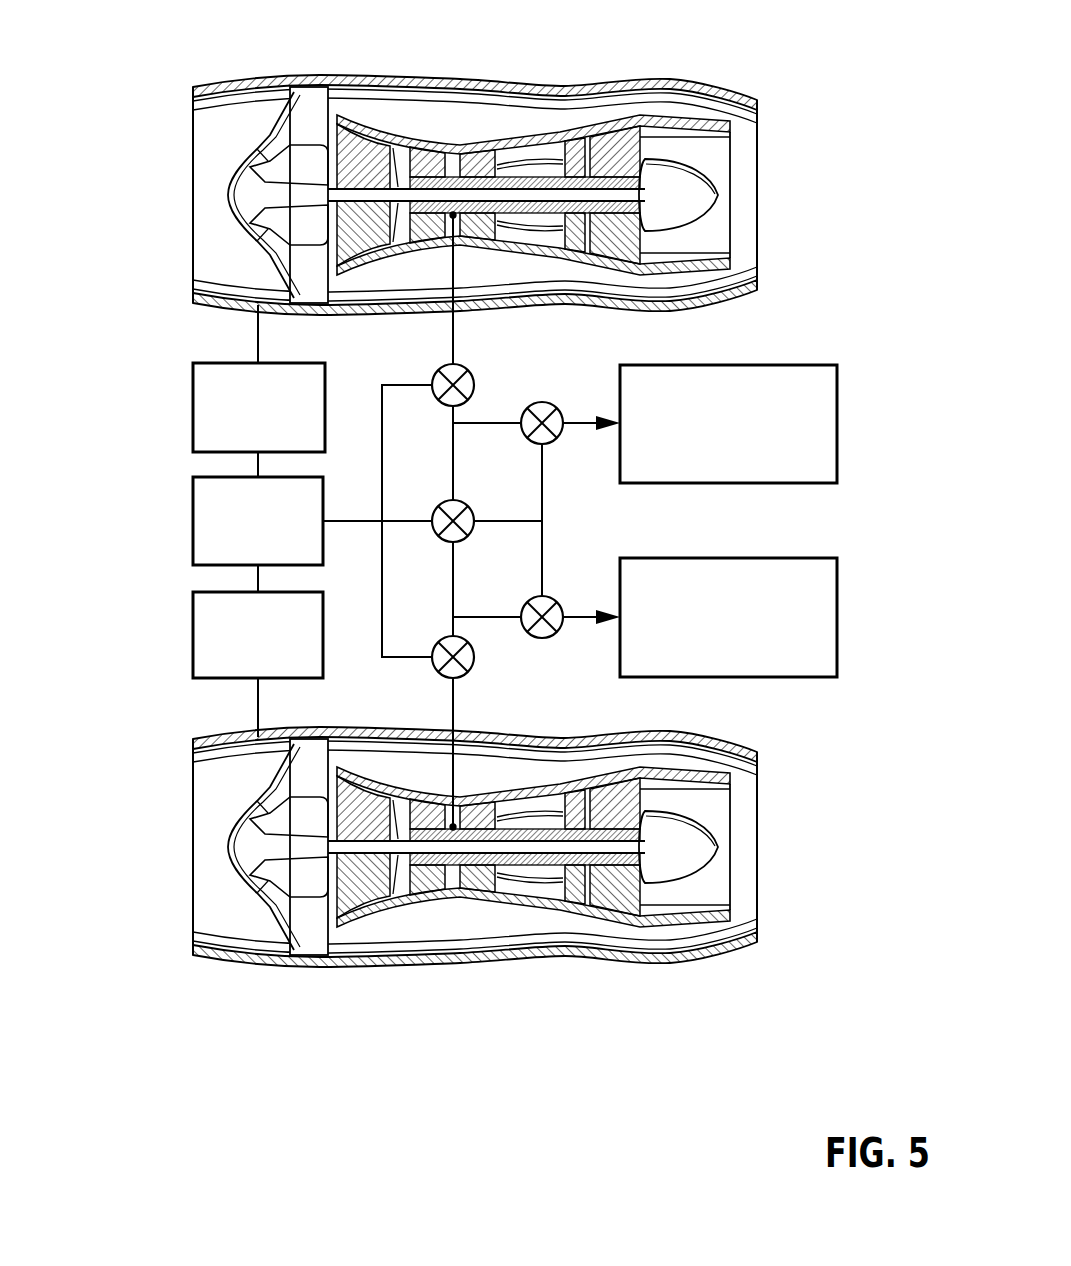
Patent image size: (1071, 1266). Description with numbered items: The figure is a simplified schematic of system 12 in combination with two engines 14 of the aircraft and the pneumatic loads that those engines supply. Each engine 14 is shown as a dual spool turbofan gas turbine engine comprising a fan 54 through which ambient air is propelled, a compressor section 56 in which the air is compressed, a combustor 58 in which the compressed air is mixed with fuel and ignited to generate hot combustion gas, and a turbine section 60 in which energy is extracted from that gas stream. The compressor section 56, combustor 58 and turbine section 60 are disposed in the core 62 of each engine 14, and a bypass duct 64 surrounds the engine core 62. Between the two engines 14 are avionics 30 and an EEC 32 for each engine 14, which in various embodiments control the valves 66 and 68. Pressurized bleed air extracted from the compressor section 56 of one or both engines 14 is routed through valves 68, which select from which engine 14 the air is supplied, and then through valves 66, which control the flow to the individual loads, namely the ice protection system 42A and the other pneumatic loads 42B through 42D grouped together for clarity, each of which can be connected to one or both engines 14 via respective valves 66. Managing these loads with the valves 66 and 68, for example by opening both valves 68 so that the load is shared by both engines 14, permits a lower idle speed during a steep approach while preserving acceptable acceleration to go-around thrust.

The system 12 is at (130, 522).
The engine 14 is at (130, 210).
The avionics 30 is at (238, 555).
The EEC 32 is at (239, 440).
The ice protection system 42A is at (697, 472).
The other pneumatic load 42B is at (728, 617).
The other pneumatic load 42D is at (657, 667).
The fan 54 is at (310, 125).
The compressor section 56 is at (428, 160).
The combustor 58 is at (527, 170).
The turbine section 60 is at (623, 148).
The core 62 is at (703, 148).
The bypass duct 64 is at (448, 118).
The valve 66 is at (542, 402).
The valve 68 is at (458, 364).